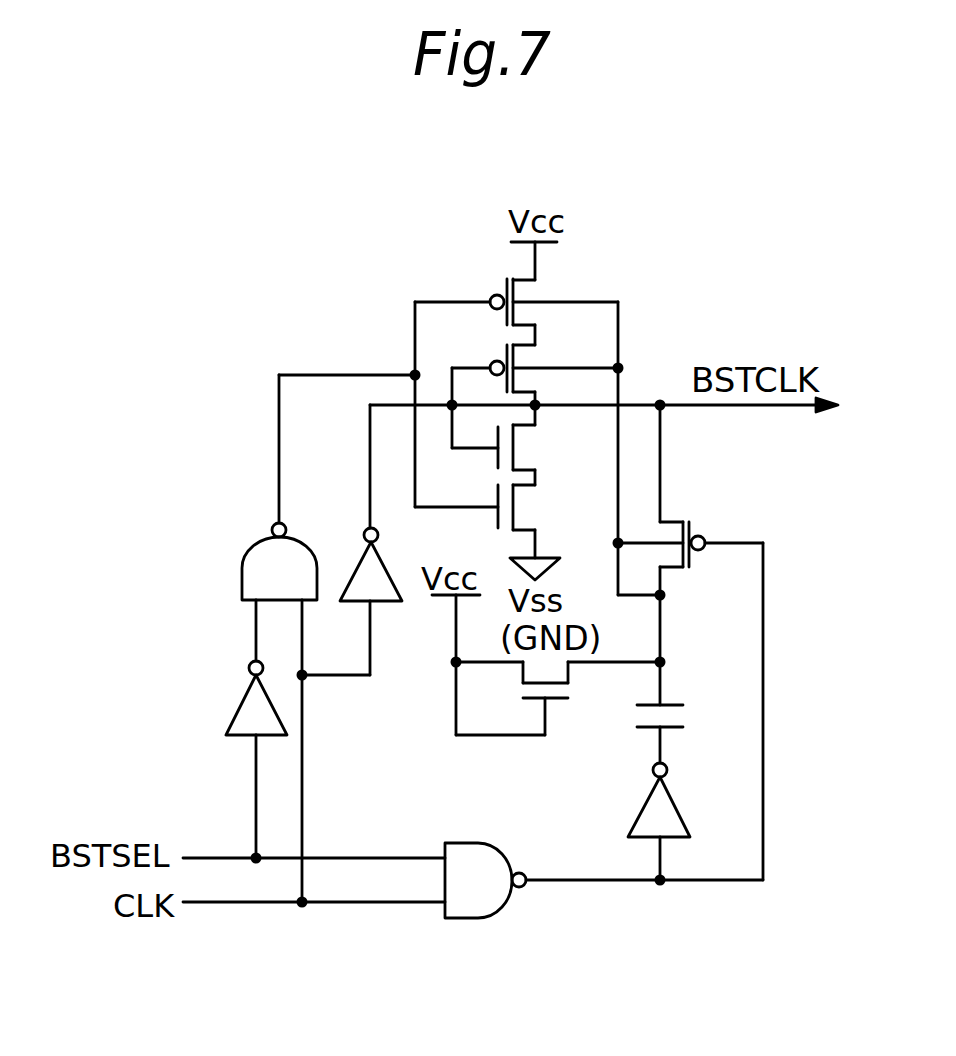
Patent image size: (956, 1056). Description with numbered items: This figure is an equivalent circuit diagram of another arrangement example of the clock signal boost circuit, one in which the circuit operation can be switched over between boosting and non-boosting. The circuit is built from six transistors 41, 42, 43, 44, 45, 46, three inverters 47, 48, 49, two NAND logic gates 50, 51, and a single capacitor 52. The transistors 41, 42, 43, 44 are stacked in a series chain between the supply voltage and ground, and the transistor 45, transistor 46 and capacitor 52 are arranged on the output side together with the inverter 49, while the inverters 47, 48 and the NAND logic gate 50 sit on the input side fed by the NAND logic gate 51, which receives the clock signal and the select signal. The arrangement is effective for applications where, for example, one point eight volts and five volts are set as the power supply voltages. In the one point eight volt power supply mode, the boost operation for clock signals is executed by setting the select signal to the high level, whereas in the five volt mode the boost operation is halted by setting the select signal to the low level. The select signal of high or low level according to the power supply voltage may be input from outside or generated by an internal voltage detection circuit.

The transistor 41 is at (522, 510).
The transistor 42 is at (522, 455).
The transistor 43 is at (522, 355).
The transistor 44 is at (520, 290).
The transistor 45 is at (700, 530).
The transistor 46 is at (560, 705).
The inverter 47 is at (240, 700).
The inverter 48 is at (356, 565).
The inverter 49 is at (675, 800).
The NAND logic gate 50 is at (242, 566).
The NAND logic gate 51 is at (466, 918).
The capacitor 52 is at (690, 715).